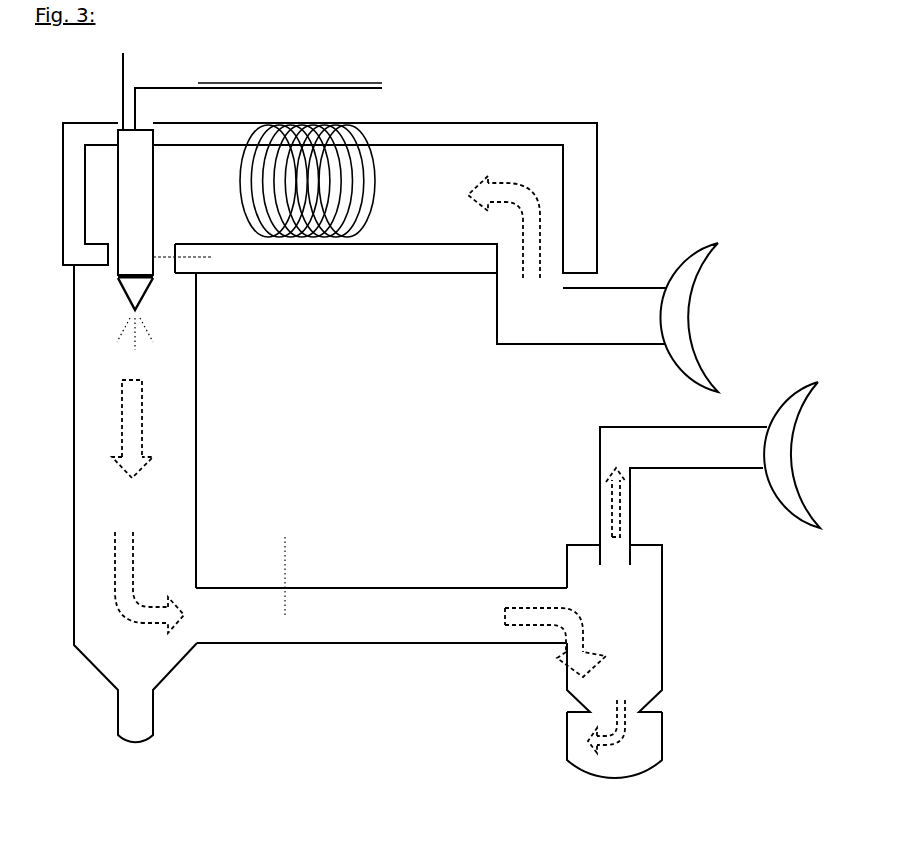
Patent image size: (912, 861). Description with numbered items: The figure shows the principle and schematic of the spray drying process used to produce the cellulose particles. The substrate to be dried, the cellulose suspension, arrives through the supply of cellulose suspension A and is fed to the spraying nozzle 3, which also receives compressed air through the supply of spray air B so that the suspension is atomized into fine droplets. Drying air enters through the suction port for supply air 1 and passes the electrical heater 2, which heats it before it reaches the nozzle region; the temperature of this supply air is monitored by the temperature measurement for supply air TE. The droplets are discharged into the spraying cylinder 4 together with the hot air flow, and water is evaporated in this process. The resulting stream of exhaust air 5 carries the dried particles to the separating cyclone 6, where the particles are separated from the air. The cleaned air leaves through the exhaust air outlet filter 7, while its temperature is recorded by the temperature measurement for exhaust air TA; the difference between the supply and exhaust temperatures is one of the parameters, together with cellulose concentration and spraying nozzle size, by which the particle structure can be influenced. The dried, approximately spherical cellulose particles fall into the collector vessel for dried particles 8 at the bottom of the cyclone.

The suction port for supply air 1 is at (446, 317).
The electrical heater 2 is at (330, 200).
The spraying nozzle 3 is at (135, 240).
The spraying cylinder 4 is at (135, 503).
The exhaust air 5 is at (401, 632).
The separating cyclone 6 is at (614, 628).
The exhaust air outlet filter 7 is at (710, 473).
The collector vessel for dried particles 8 is at (614, 739).
The supply of cellulose suspension A is at (258, 148).
The supply of spray air B is at (111, 91).
The temperature measurement for supply air TE is at (198, 259).
The temperature measurement for exhaust air TA is at (287, 561).